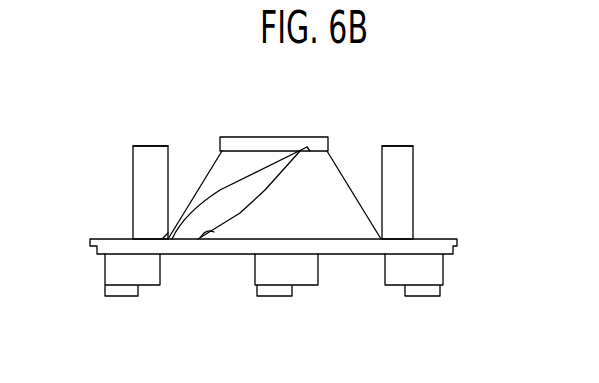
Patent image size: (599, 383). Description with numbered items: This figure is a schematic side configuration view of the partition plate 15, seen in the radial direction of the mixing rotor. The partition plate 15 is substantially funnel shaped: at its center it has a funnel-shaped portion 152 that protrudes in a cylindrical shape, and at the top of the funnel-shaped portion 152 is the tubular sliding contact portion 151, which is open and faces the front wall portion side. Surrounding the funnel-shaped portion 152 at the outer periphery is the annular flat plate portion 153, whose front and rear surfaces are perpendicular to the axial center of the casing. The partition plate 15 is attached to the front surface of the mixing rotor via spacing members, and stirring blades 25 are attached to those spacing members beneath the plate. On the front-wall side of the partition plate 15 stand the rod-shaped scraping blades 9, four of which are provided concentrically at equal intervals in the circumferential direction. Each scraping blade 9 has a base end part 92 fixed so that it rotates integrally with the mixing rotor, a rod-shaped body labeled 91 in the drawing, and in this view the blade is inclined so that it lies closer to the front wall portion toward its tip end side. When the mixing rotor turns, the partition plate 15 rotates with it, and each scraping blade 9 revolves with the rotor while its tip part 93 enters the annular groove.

The scraping blade 9 is at (133, 156).
The body portion of support member 91 is at (396, 153).
The base end part 92 is at (131, 238).
The tip part 93 is at (155, 145).
The partition plate 15 is at (458, 247).
The tubular sliding contact portion 151 is at (326, 148).
The funnel-shaped portion 152 is at (353, 215).
The annular flat plate portion 153 is at (183, 244).
The stirring blade 25 is at (118, 277).